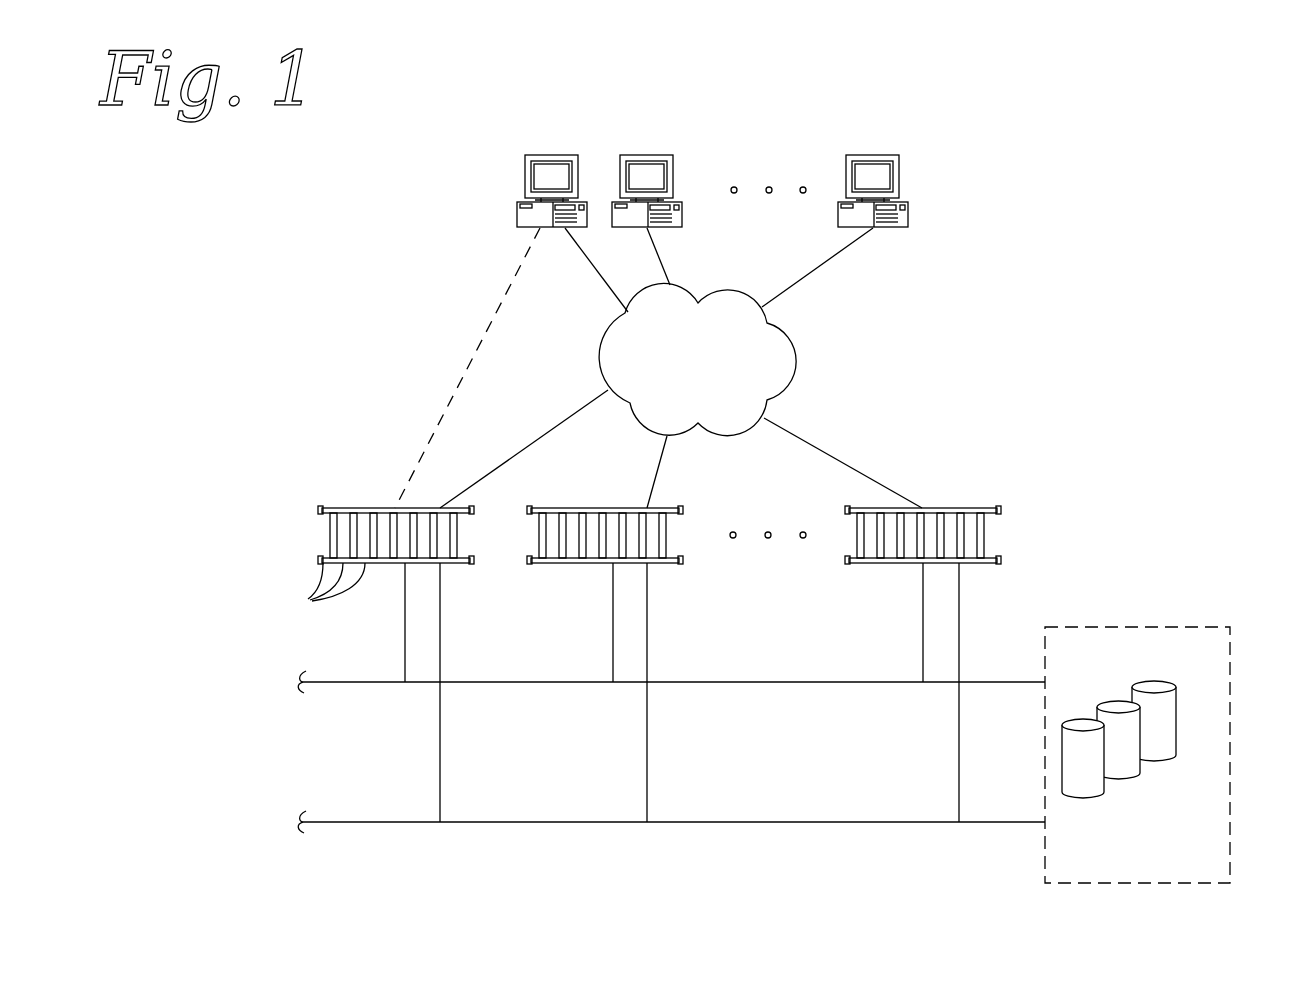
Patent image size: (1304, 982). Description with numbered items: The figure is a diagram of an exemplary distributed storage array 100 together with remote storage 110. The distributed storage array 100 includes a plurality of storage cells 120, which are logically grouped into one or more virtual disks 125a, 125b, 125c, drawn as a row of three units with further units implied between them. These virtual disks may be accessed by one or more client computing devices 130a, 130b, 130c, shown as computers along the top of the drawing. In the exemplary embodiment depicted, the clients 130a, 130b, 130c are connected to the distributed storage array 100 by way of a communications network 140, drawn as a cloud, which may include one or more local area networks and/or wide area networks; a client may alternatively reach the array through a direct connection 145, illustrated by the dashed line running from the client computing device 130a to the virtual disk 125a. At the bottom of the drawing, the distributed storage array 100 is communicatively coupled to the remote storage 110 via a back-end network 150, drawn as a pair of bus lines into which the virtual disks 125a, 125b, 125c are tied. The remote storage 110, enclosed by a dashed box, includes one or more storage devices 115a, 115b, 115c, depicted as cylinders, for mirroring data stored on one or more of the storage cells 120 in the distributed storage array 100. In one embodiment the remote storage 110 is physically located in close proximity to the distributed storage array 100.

The distributed storage array 100 is at (1016, 480).
The remote storage 110 is at (1193, 627).
The storage device 115a is at (1082, 797).
The storage device 115b is at (1122, 778).
The storage device 115c is at (1158, 760).
The storage cells 120 is at (312, 600).
The virtual disk 125a is at (329, 500).
The virtual disk 125b is at (612, 499).
The virtual disk 125c is at (855, 498).
The client computing device 130a is at (549, 155).
The client computing device 130b is at (646, 155).
The client computing device 130c is at (872, 155).
The communications network 140 is at (798, 362).
The direct connection 145 is at (468, 362).
The back-end network 150 is at (806, 672).